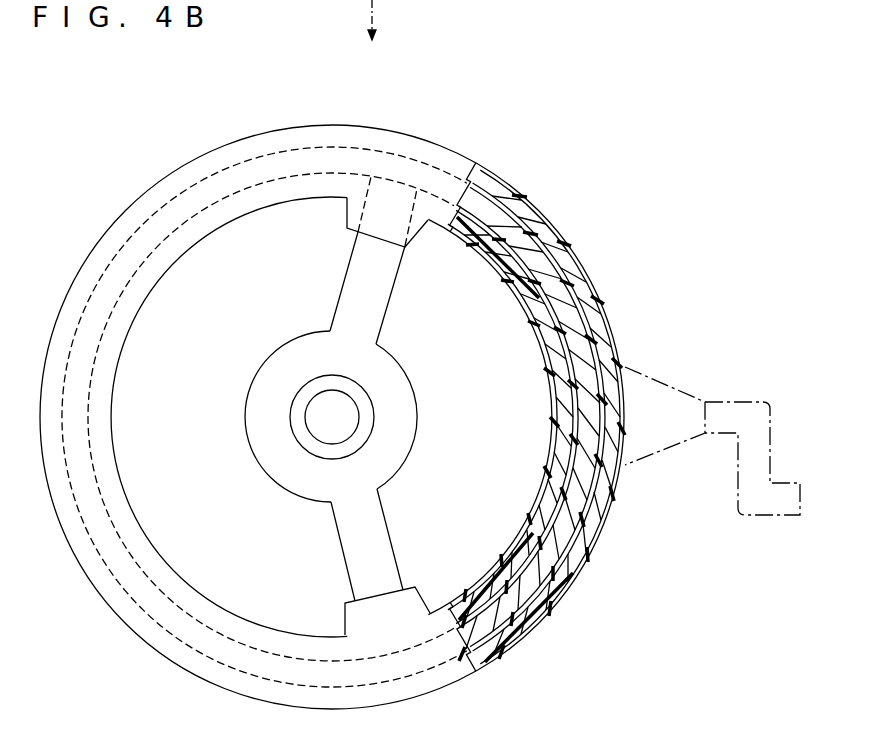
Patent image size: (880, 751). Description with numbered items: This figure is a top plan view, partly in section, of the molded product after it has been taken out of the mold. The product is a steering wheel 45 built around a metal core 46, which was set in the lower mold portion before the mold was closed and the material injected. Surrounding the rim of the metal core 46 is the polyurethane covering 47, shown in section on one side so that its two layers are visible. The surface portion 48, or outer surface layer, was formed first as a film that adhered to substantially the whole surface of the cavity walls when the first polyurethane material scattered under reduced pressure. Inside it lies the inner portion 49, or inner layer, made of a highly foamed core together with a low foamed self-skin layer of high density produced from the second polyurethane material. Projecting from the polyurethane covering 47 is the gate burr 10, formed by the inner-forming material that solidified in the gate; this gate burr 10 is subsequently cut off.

The steering wheel 45 is at (211, 144).
The metal core 46 is at (562, 238).
The polyurethane covering 47 is at (690, 250).
The surface portion 48 is at (603, 297).
The inner portion 49 is at (606, 347).
The gate burr 10 is at (672, 447).